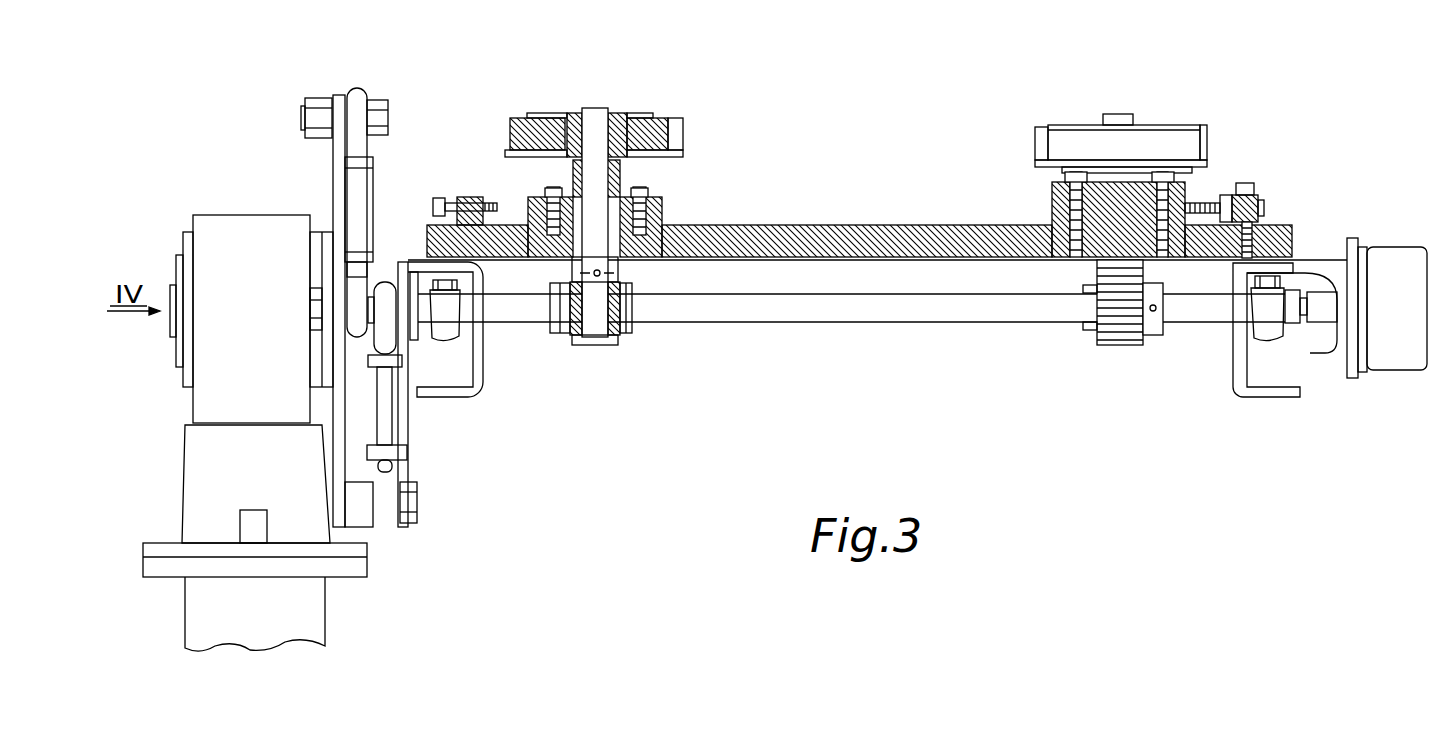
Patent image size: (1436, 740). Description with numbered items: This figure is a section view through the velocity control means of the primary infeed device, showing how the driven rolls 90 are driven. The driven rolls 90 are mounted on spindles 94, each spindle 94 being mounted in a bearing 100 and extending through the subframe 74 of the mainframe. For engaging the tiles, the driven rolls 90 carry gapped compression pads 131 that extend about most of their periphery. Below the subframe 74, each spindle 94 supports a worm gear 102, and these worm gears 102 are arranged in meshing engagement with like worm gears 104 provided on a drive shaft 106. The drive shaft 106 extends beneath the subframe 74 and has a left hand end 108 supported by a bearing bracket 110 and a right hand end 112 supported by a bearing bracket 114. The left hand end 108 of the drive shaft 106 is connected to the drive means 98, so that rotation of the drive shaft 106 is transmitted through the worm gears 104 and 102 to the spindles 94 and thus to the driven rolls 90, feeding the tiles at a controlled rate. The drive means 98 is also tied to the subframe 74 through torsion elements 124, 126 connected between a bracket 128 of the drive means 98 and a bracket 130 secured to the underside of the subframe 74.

The subframe 74 is at (823, 228).
The driven rolls 90 is at (640, 116).
The spindles 94 is at (597, 108).
The drive means 98 is at (206, 190).
The bearing 100 is at (655, 212).
The worm gear 102 is at (627, 340).
The worm gears 104 is at (597, 346).
The drive shaft 106 is at (921, 316).
The left hand end 108 is at (518, 318).
The bearing bracket 110 is at (450, 335).
The right hand end 112 is at (1215, 316).
The bearing bracket 114 is at (1270, 334).
The torsion element 124 is at (363, 186).
The torsion element 126 is at (405, 427).
The bracket 128 is at (337, 453).
The bracket 130 is at (406, 264).
The gapped compression pads 131 is at (680, 122).